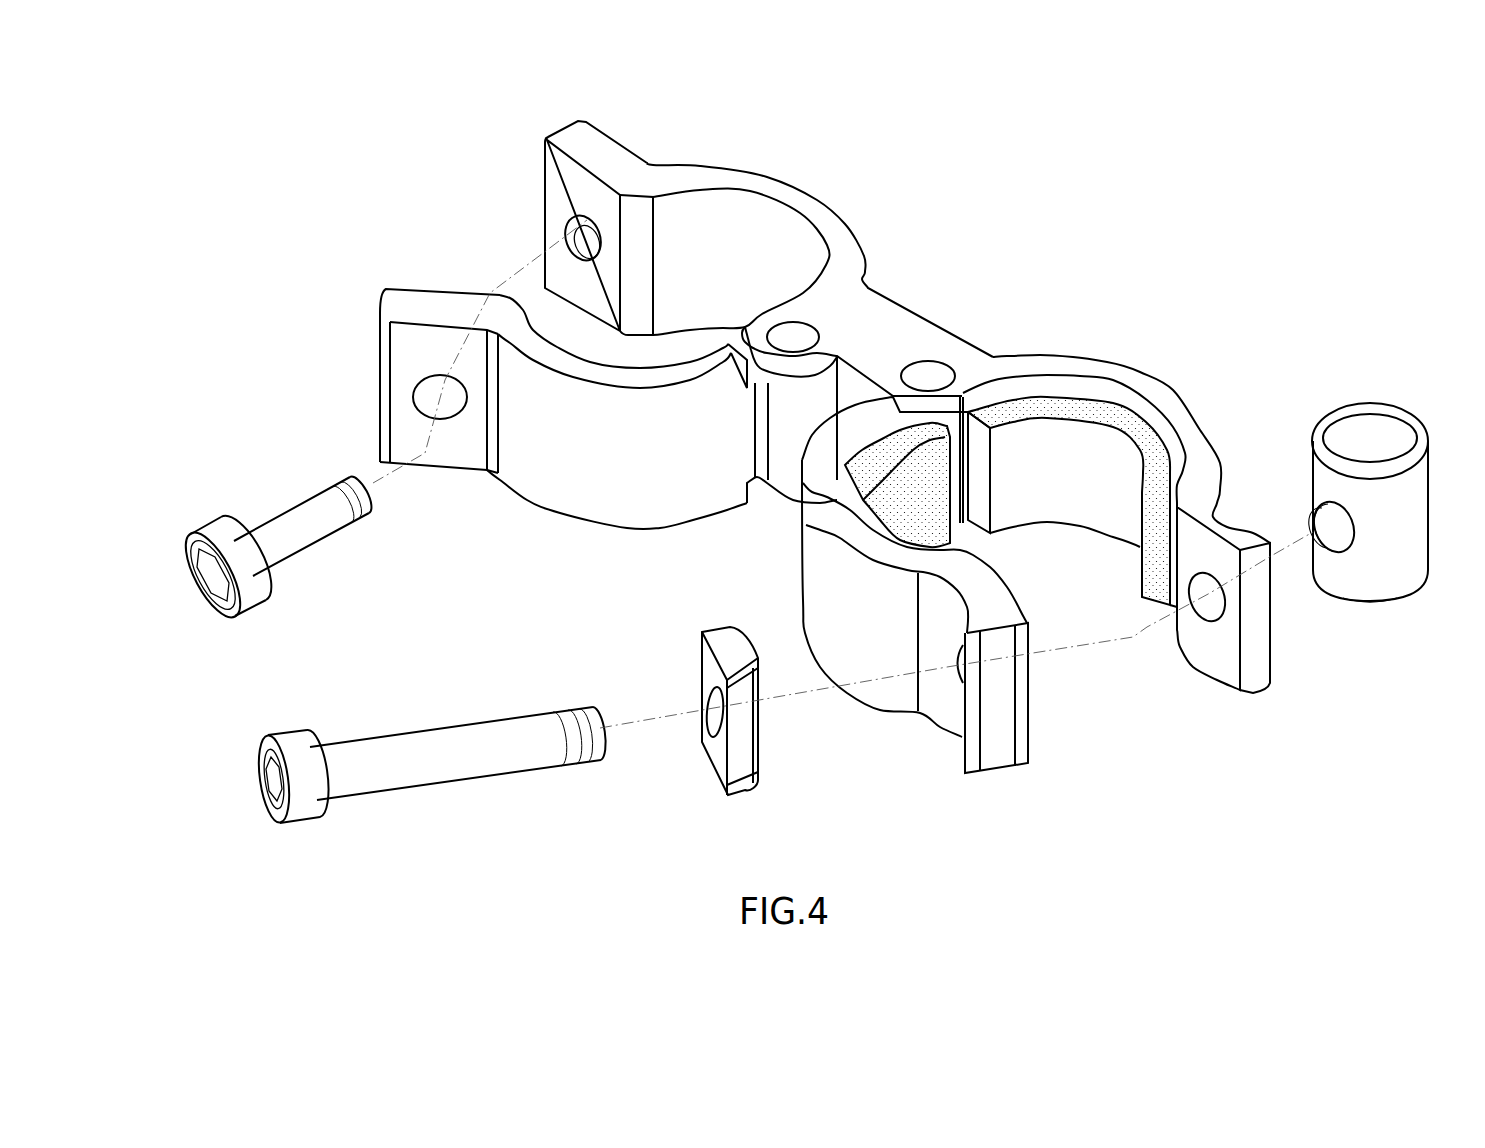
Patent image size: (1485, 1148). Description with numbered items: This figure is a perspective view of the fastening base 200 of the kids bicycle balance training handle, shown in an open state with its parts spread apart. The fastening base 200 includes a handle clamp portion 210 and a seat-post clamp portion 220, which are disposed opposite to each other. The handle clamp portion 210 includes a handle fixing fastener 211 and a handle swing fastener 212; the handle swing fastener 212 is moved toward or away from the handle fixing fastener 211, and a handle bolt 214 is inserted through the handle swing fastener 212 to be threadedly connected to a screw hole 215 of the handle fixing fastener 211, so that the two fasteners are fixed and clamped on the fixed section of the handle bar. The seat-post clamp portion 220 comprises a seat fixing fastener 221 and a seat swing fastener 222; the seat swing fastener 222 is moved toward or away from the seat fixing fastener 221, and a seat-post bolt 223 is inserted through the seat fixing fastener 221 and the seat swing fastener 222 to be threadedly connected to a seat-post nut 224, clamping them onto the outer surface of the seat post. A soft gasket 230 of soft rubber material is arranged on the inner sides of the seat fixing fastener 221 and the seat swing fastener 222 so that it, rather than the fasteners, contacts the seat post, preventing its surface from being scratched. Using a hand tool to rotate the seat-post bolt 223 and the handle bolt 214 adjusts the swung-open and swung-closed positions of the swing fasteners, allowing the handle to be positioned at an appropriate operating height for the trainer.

The fastening base 200 is at (1016, 276).
The handle clamp portion 210 is at (453, 245).
The handle fixing fastener 211 is at (821, 198).
The handle swing fastener 212 is at (564, 494).
The handle bolt 214 is at (215, 584).
The screw hole 215 is at (578, 226).
The seat-post clamp portion 220 is at (1157, 744).
The seat fixing fastener 221 is at (1177, 400).
The seat swing fastener 222 is at (890, 692).
The seat-post bolt 223 is at (272, 780).
The seat-post nut 224 is at (1381, 419).
The soft gasket 230 is at (1042, 443).